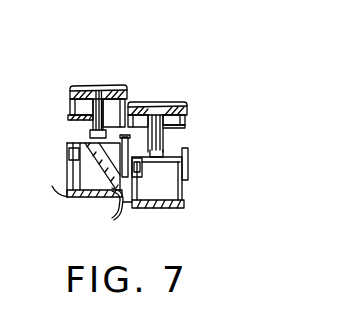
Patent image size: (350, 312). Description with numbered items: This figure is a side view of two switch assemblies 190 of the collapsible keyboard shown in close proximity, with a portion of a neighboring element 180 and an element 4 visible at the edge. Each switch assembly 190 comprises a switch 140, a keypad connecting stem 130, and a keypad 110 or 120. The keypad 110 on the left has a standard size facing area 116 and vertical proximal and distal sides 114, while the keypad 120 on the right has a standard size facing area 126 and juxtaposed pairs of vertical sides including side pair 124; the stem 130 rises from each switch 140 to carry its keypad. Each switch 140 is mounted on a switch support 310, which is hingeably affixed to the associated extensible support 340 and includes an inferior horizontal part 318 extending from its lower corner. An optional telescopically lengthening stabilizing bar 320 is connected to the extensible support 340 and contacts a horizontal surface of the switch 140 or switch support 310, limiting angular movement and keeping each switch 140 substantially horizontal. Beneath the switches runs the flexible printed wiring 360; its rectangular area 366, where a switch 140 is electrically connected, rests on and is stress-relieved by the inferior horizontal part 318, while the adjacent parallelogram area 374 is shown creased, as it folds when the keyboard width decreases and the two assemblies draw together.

The keypad 110 is at (74, 80).
The vertical proximal and distal sides 114 is at (68, 97).
The facing area 116 is at (89, 83).
The keypad 120 is at (199, 105).
The side pair 124 is at (88, 122).
The facing area 126 is at (167, 100).
The keypad connecting stem 130 is at (75, 116).
The switch 140 is at (79, 166).
The adjacent element 180 is at (14, 27).
The switch assembly 190 is at (200, 31).
The adjacent element 4 is at (4, 67).
The switch support 310 is at (165, 213).
The inferior horizontal part 318 is at (92, 205).
The stabilizing bar 320 is at (68, 155).
The extensible support 340 is at (259, 143).
The flexible printed wiring 360 is at (104, 222).
The rectangular area 366 is at (85, 200).
The parallelogram area 374 is at (148, 222).